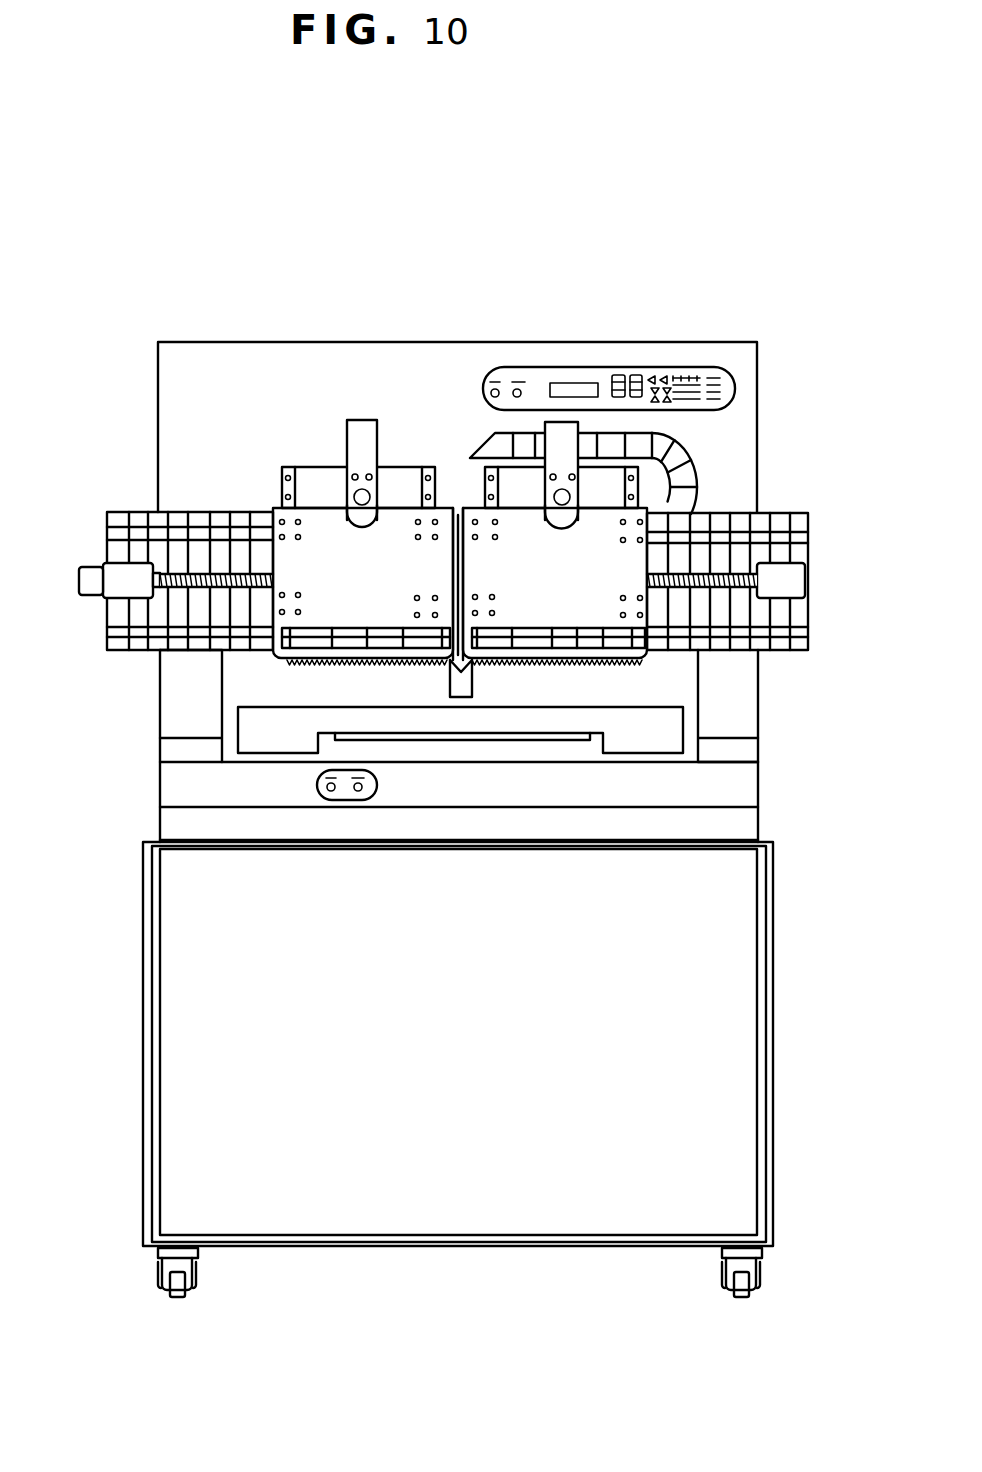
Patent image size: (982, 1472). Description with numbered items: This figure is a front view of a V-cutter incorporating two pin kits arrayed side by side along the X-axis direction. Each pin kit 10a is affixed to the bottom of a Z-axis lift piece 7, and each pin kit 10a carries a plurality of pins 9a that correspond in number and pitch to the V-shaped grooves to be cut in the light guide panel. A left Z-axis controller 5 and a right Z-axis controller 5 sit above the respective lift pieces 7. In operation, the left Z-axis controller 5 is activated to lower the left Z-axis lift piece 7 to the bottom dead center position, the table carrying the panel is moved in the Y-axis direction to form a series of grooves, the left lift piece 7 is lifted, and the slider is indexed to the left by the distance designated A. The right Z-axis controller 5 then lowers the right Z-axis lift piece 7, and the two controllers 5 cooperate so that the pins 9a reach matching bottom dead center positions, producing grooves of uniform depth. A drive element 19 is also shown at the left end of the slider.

The Z-axis controller 5 is at (367, 430).
The Z-axis lift piece 7 is at (533, 547).
The drive motor 19 is at (95, 567).
The pin kit 10a is at (287, 657).
The pins 9a is at (353, 665).
The indexing distance A is at (461, 678).